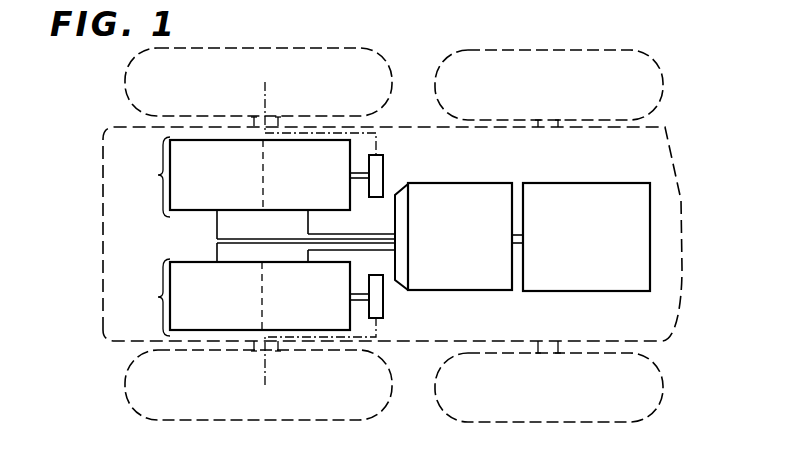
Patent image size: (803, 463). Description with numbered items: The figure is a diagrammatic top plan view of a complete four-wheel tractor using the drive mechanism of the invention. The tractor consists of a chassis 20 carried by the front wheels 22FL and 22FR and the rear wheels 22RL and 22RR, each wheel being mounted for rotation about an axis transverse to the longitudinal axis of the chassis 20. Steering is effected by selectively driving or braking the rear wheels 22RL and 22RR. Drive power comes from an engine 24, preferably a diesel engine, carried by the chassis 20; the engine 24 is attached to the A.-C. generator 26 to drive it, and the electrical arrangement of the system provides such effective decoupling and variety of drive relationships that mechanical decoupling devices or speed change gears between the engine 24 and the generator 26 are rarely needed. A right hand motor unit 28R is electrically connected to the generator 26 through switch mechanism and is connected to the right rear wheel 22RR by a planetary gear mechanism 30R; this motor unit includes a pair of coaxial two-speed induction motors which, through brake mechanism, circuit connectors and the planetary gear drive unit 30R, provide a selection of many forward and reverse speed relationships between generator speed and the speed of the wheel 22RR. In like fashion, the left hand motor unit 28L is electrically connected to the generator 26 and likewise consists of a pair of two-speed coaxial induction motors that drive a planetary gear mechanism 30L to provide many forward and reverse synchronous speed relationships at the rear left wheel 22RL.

The chassis 20 is at (683, 201).
The rear left wheel 22RL is at (207, 48).
The front left wheel 22FL is at (490, 50).
The rear right wheel 22RR is at (332, 420).
The front right wheel 22FR is at (663, 389).
The engine 24 is at (613, 254).
The A.-C. generator 26 is at (452, 183).
The left hand motor unit 28L is at (157, 175).
The right hand motor unit 28R is at (157, 297).
The planetary gear mechanism 30L is at (384, 169).
The planetary gear mechanism 30R is at (384, 316).